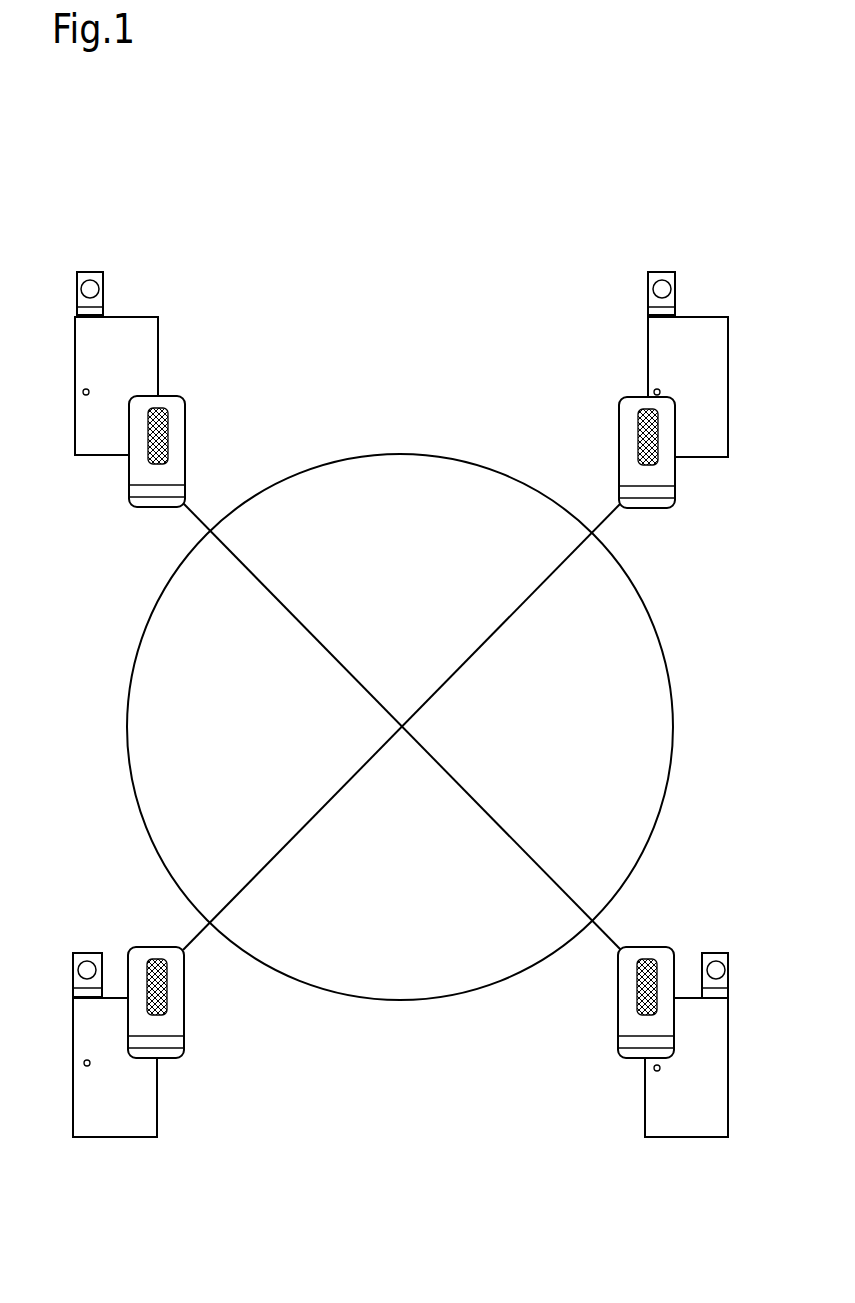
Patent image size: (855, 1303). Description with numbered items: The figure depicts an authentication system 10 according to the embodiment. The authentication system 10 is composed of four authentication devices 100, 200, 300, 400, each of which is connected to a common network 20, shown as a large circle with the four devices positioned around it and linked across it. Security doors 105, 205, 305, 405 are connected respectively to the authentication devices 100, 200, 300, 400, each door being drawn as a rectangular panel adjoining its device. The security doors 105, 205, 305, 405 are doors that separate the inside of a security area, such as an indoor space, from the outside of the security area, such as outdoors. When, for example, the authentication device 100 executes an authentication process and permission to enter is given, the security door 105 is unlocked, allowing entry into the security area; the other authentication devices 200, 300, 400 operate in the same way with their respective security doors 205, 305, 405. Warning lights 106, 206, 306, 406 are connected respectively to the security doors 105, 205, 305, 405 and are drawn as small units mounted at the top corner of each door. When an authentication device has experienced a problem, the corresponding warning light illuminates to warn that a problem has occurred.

The authentication system 10 is at (148, 170).
The network 20 is at (412, 452).
The authentication device 100 is at (170, 396).
The security door 105 is at (130, 316).
The warning light 106 is at (101, 271).
The authentication device 200 is at (157, 947).
The security door 205 is at (118, 997).
The warning light 206 is at (83, 952).
The authentication device 300 is at (633, 397).
The security door 305 is at (698, 317).
The warning light 306 is at (662, 272).
The authentication device 400 is at (657, 947).
The security door 405 is at (688, 998).
The warning light 406 is at (718, 953).